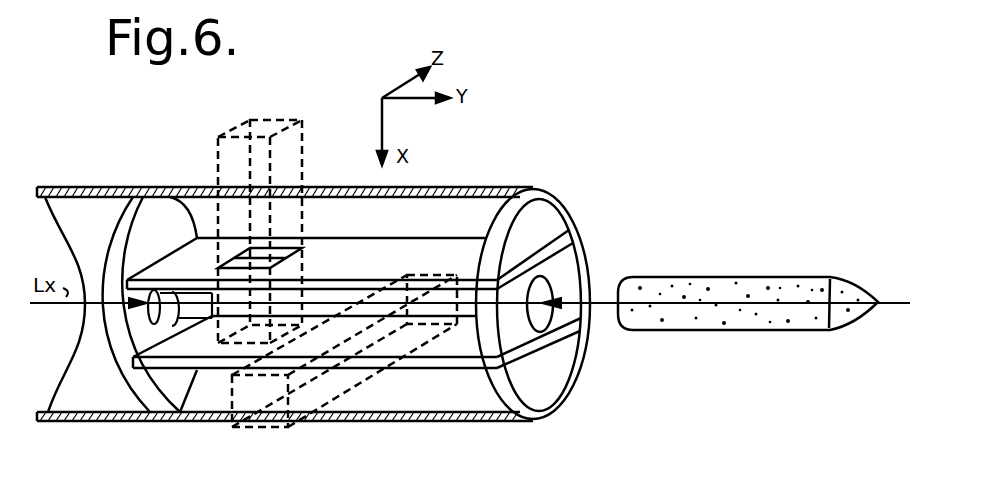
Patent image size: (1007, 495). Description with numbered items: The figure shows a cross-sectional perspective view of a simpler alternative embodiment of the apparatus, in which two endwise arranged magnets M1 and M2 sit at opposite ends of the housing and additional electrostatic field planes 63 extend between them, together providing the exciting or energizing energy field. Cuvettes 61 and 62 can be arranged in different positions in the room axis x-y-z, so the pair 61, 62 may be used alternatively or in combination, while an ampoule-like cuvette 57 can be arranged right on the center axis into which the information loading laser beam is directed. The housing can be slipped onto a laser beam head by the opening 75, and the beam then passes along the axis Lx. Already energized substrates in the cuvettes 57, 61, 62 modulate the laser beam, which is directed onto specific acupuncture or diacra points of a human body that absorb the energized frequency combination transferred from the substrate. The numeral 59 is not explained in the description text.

The cuvette 57 is at (723, 276).
The housing tube 59 is at (463, 187).
The cuvette 61 is at (354, 392).
The cuvette 62 is at (240, 128).
The electrostatic field planes 63 is at (556, 252).
The opening 75 is at (150, 333).
The magnet M1 is at (165, 394).
The magnet M2 is at (547, 393).